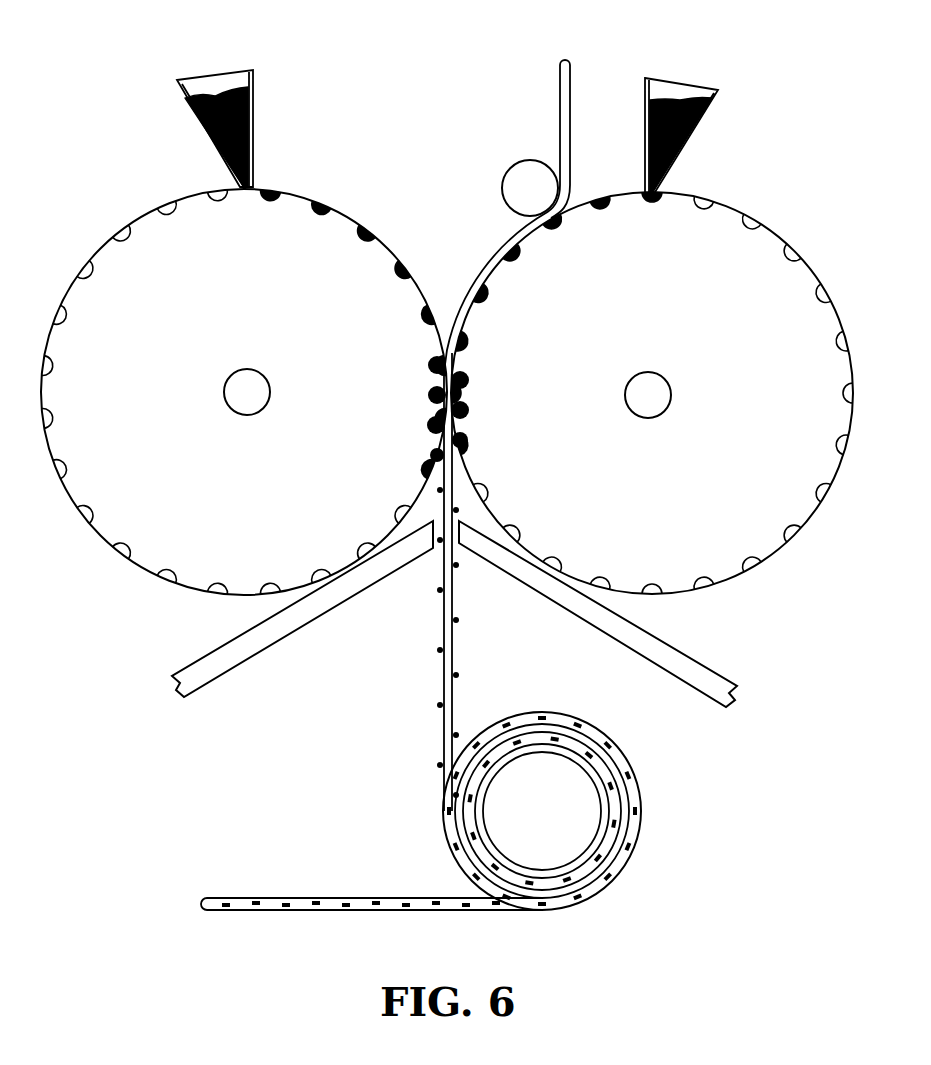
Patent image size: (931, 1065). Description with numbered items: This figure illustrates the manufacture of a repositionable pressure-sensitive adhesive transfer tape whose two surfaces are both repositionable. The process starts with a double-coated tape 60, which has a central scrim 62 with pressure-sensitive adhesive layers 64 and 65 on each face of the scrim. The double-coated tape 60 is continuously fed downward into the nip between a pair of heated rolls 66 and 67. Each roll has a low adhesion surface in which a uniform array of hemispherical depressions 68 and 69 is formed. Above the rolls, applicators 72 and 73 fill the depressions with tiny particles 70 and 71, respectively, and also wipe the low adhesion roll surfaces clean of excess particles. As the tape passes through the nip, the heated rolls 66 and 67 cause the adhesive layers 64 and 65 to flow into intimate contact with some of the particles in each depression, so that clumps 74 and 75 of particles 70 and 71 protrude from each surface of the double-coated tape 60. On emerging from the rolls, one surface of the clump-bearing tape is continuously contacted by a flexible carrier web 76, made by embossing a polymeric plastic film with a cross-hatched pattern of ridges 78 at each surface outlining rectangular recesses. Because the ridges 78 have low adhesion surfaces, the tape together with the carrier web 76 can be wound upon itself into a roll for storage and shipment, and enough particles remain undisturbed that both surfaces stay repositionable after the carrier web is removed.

The double-coated tape 60 is at (555, 75).
The central scrim 62 is at (575, 72).
The pressure-sensitive adhesive layer 64 is at (560, 107).
The pressure-sensitive adhesive layer 65 is at (572, 100).
The heated roll 66 is at (124, 510).
The heated roll 67 is at (788, 504).
The hemispherical depressions 68 is at (68, 317).
The hemispherical depressions 69 is at (822, 332).
The tiny particles 70 is at (183, 112).
The tiny particles 71 is at (708, 118).
The applicator 72 is at (212, 137).
The applicator 73 is at (683, 156).
The clumps 74 is at (443, 672).
The clumps 75 is at (458, 662).
The flexible carrier web 76 is at (305, 896).
The ridges 78 is at (620, 855).